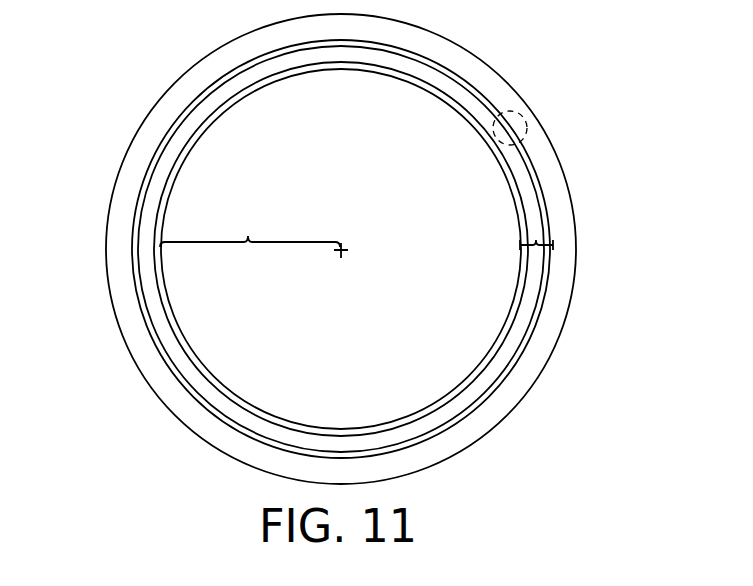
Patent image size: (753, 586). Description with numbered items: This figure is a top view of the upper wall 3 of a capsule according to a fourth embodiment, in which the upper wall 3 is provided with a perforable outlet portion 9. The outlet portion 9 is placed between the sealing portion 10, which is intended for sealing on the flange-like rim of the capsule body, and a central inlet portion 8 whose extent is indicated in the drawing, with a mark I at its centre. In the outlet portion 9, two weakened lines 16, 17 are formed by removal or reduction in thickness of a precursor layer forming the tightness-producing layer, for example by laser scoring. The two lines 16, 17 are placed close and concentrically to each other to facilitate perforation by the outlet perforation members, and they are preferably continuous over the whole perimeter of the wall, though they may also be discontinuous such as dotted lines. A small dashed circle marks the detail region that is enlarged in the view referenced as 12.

The upper wall 3 is at (96, 229).
The central inlet portion 8 is at (250, 227).
The perforable outlet portion 9 is at (536, 240).
The sealing portion 10 is at (465, 58).
The detail region shown in FIG. 12 is at (535, 126).
The weakened line 16 is at (170, 382).
The weakened line 17 is at (450, 412).
The center axis I is at (351, 242).